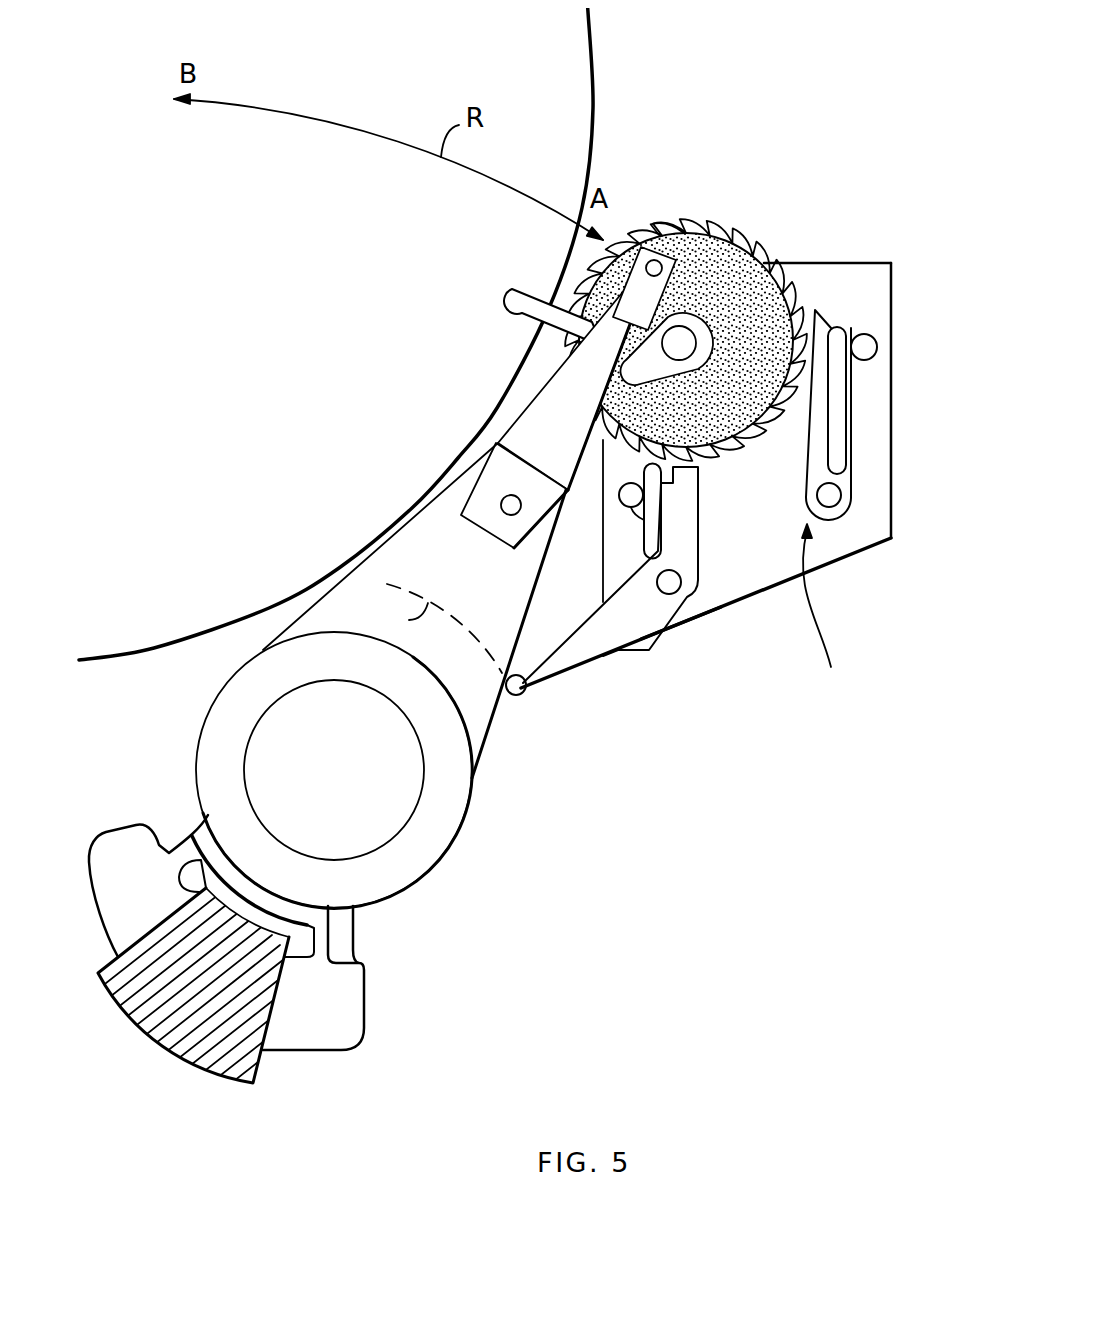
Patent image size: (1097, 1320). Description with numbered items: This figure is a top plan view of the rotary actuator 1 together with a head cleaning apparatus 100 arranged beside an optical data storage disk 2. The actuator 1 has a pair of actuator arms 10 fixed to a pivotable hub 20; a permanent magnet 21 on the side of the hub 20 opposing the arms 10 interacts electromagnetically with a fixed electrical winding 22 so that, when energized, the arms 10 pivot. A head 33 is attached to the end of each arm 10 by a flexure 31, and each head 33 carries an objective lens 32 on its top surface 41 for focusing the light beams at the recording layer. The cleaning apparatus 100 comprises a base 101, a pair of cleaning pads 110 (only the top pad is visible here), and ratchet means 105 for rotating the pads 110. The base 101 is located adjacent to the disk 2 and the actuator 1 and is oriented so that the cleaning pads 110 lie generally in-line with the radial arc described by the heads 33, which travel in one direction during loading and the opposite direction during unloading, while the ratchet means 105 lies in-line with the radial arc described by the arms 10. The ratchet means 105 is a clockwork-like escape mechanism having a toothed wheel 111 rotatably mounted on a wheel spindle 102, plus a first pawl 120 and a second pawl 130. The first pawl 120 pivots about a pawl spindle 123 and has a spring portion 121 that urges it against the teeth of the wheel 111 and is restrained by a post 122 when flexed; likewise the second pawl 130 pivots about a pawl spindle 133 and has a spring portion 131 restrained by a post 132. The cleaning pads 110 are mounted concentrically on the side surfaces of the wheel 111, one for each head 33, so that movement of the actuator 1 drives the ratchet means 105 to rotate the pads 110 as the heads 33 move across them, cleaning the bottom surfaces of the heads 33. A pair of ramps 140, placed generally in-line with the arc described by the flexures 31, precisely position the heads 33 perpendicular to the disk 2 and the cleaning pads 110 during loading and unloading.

The rotary actuator 1 is at (475, 866).
The optical data storage disk 2 is at (596, 84).
The actuator arm 10 is at (478, 740).
The pivotable hub 20 is at (353, 912).
The permanent magnet 21 is at (262, 1063).
The electrical winding 22 is at (363, 1012).
The flexure 31 is at (462, 518).
The objective lens 32 is at (643, 250).
The head 33 is at (652, 252).
The top surface 41 is at (665, 217).
The head cleaning apparatus 100 is at (706, 662).
The base 101 is at (818, 570).
The wheel spindle 102 is at (763, 263).
The ratchet means 105 is at (839, 611).
The cleaning pad 110 is at (705, 330).
The toothed wheel 111 is at (723, 227).
The first pawl 120 is at (560, 677).
The spring portion 121 is at (640, 537).
The post 122 is at (728, 510).
The pawl spindle 123 is at (680, 590).
The second pawl 130 is at (733, 478).
The spring portion 131 is at (856, 432).
The post 132 is at (870, 340).
The pawl spindle 133 is at (842, 495).
The ramp 140 is at (526, 330).